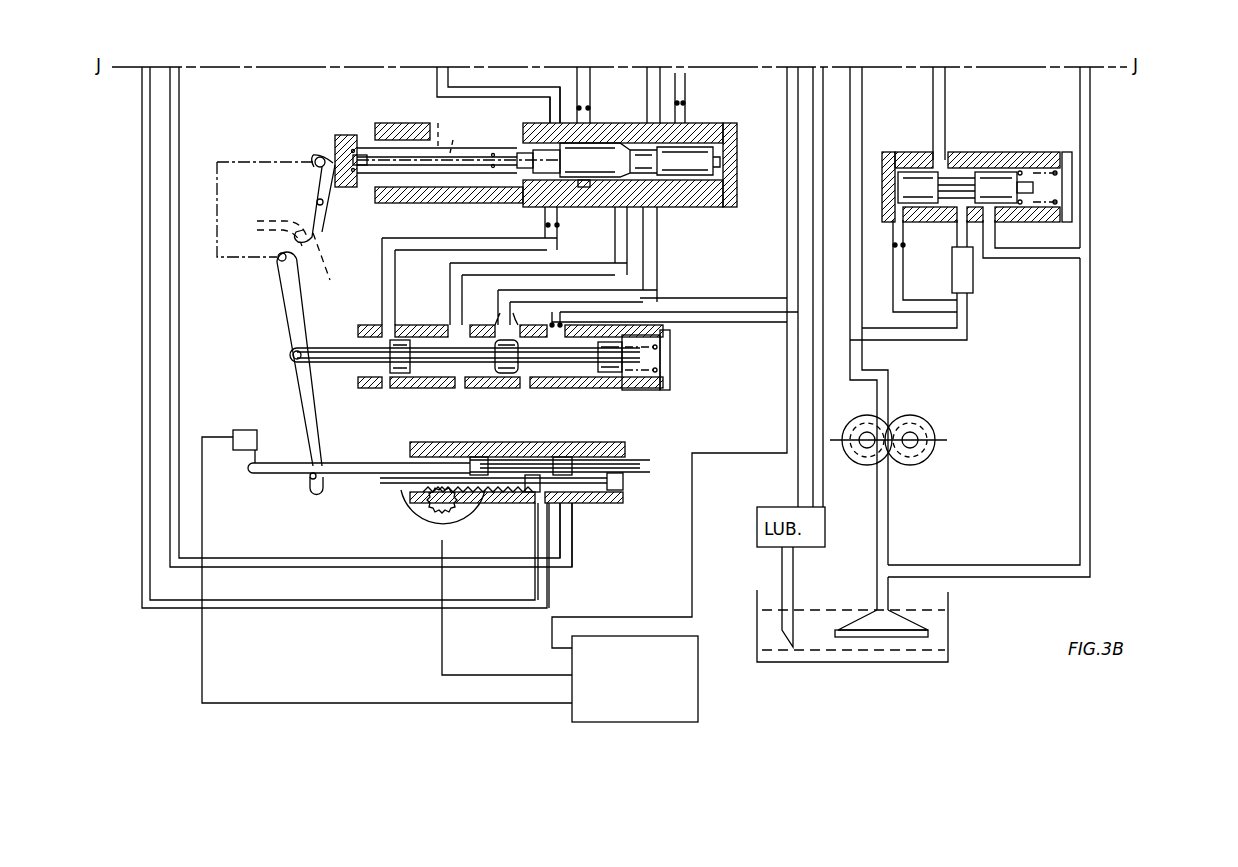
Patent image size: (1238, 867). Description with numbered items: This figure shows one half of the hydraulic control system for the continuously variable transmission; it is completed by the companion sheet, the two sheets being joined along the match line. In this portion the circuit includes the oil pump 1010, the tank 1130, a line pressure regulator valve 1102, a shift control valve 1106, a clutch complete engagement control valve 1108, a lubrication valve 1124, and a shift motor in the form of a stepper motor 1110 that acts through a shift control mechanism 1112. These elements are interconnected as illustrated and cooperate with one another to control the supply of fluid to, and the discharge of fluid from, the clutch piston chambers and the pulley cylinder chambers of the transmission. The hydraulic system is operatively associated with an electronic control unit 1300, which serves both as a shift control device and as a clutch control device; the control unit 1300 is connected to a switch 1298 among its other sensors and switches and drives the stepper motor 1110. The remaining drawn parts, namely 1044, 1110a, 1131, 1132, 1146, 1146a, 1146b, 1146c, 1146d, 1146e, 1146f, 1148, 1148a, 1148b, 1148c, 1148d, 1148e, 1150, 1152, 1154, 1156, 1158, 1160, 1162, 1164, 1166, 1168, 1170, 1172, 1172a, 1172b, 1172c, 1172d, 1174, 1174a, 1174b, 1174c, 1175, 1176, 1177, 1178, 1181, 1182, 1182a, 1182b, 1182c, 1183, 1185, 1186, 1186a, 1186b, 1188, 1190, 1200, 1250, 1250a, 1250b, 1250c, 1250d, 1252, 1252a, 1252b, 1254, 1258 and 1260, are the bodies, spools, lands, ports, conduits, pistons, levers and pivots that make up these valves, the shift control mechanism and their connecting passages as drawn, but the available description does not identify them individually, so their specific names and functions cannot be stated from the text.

The oil pump 1010 is at (938, 406).
The cam 1044 is at (332, 282).
The line pressure regulator valve 1102 is at (710, 242).
The shift control valve 1106 is at (609, 394).
The clutch complete engagement control valve 1108 is at (590, 522).
The stepper motor 1110 is at (392, 517).
The pinion 1110a is at (438, 505).
The shift control mechanism 1112 is at (273, 361).
The lubrication valve 1124 is at (987, 132).
The tank 1130 is at (948, 651).
The suction strainer 1131 is at (887, 642).
The conduit 1132 is at (863, 99).
The spool 1146 is at (632, 137).
The port 1146a is at (548, 226).
The port 1146b is at (583, 187).
The port 1146c is at (647, 187).
The port 1146d is at (650, 183).
The land 1146e is at (683, 183).
The land 1146f is at (718, 180).
The valve housing 1148 is at (737, 158).
The port 1148a is at (542, 123).
The port 1148b is at (562, 137).
The port 1148c is at (597, 140).
The port 1148d is at (680, 140).
The port 1148e is at (713, 135).
The actuator 1150 is at (350, 137).
The piston 1152 is at (438, 124).
The rod 1154 is at (474, 138).
The lever 1156 is at (322, 227).
The stem 1158 is at (330, 197).
The conduit 1160 is at (417, 250).
The conduit 1162 is at (437, 78).
The conduit 1164 is at (787, 98).
The conduit 1166 is at (545, 230).
The line J 1168 is at (580, 72).
The conduit 1170 is at (677, 98).
The piston 1172 is at (387, 383).
The chamber 1172a is at (367, 400).
The chamber 1172b is at (450, 390).
The piston 1172c is at (502, 387).
The piston 1172d is at (547, 388).
The piston rod 1174 is at (338, 347).
The conduit 1174a is at (393, 323).
The conduit 1174b is at (500, 330).
The end cap 1174c is at (667, 358).
The end plate 1175 is at (643, 388).
The conduit 1176 is at (773, 292).
The port 1177 is at (552, 273).
The lever 1178 is at (302, 388).
The pivot 1181 is at (287, 350).
The rack rod 1182 is at (353, 483).
The piston 1182a is at (533, 475).
The piston 1182b is at (613, 480).
The rack 1182c is at (500, 503).
The pivot 1183 is at (317, 155).
The lever 1185 is at (307, 478).
The cylinder housing 1186 is at (625, 450).
The port 1186a is at (538, 538).
The port 1186b is at (575, 500).
The conduit 1188 is at (297, 615).
The conduit 1190 is at (180, 105).
The conduit 1200 is at (967, 553).
The valve housing 1250 is at (1087, 160).
The port 1250a is at (898, 167).
The port 1250b is at (943, 163).
The port 1250c is at (987, 162).
The port 1250d is at (1053, 152).
The spool 1252 is at (997, 190).
The conduit 1252a is at (912, 193).
The conduit 1252b is at (997, 215).
The spring 1254 is at (1025, 222).
The restrictor 1258 is at (952, 247).
The conduit 1260 is at (973, 282).
The switch 1298 is at (243, 430).
The electronic control unit 1300 is at (700, 716).